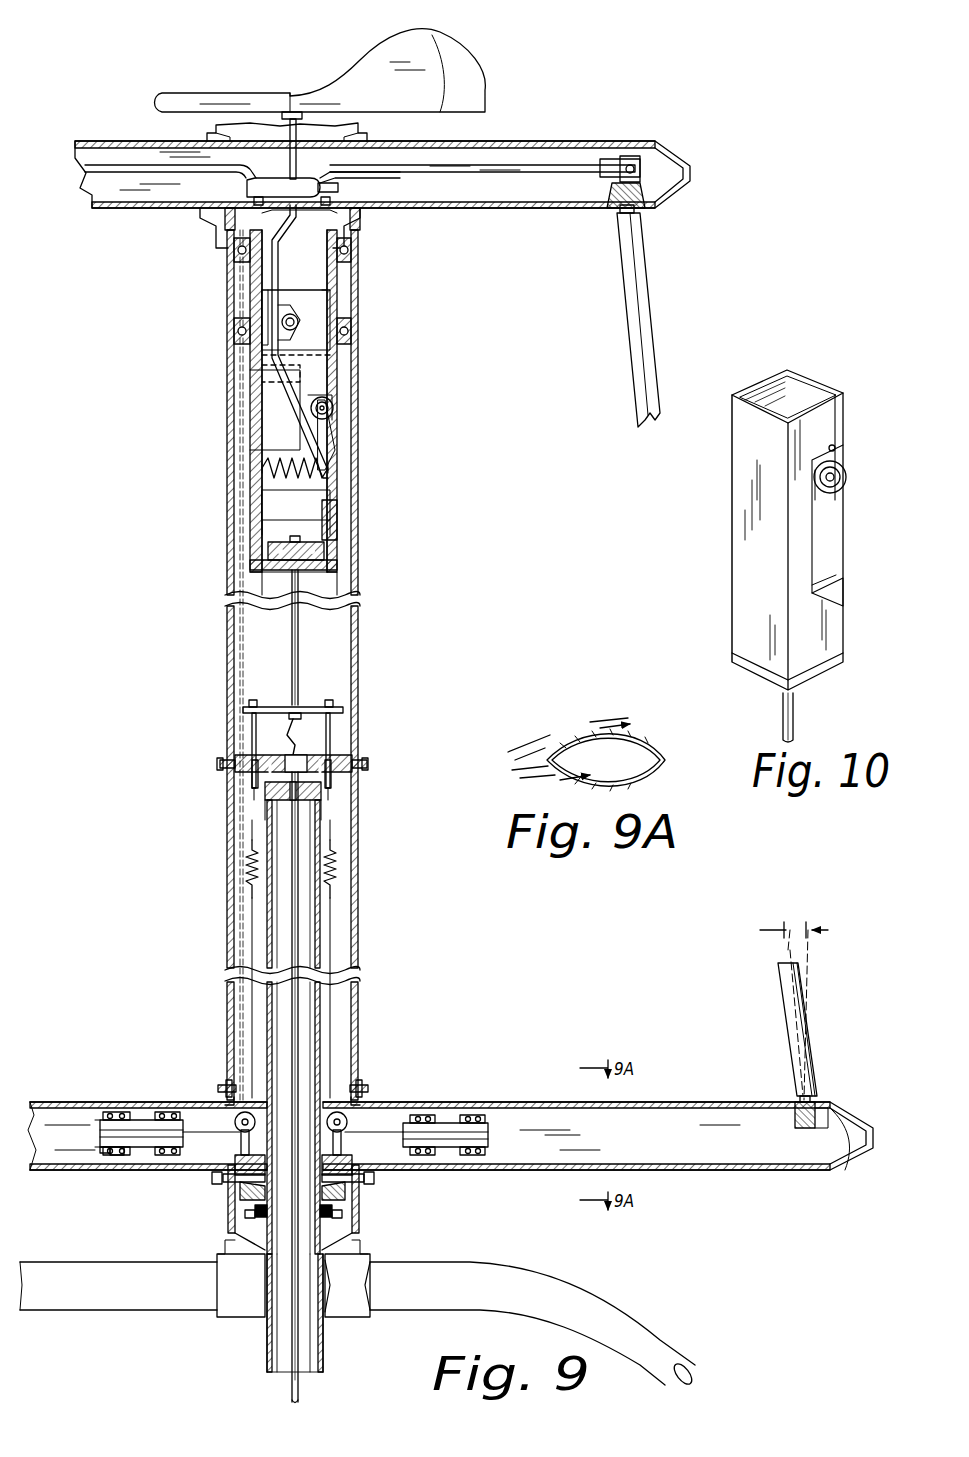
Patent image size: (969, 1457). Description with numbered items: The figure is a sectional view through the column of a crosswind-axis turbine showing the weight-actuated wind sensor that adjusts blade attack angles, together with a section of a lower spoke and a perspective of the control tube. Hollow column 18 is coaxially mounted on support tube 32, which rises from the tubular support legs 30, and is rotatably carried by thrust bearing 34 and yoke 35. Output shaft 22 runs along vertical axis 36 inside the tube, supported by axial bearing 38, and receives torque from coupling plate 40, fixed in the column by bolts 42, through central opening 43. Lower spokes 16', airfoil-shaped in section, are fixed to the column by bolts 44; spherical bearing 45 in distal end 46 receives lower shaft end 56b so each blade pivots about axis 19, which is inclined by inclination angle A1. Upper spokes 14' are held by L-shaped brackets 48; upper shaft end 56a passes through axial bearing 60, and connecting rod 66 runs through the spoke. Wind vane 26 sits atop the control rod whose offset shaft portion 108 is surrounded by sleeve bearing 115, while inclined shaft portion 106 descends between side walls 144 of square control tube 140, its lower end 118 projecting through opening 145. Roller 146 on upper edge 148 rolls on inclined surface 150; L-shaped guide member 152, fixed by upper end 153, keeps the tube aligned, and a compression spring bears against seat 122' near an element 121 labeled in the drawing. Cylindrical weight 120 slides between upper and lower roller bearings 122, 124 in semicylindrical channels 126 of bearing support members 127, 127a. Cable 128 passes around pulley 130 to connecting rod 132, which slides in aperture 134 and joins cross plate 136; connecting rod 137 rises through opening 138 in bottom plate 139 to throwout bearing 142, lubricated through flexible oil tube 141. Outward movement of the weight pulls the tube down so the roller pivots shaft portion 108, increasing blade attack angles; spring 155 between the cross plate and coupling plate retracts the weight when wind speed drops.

In FIG. 9, the upper spoke 14' is at (382, 153).
In FIG. 9, the lower spoke 16' is at (450, 1107).
In FIG. 9A, the lower spoke 16' is at (589, 738).
In FIG. 9, the column 18 is at (358, 641).
In FIG. 9, the vertical axis of blade 19 is at (642, 342).
In FIG. 9, the output shaft 22 is at (298, 1345).
In FIG. 9, the wind vane 26 is at (325, 62).
In FIG. 9, the tubular support leg 30 is at (470, 1272).
In FIG. 9, the support tube 32 is at (267, 1340).
In FIG. 9, the thrust bearing 34 is at (232, 1222).
In FIG. 9, the yoke 35 is at (230, 1175).
In FIG. 9, the vertical axis of column 36 is at (300, 1398).
In FIG. 9, the axial bearing 38 is at (315, 800).
In FIG. 9, the coupling plate 40 is at (318, 752).
In FIG. 9, the bolts 42 is at (228, 770).
In FIG. 9, the central opening 43 is at (285, 757).
In FIG. 9, the bolts 44 is at (222, 1085).
In FIG. 9, the spherical bearing 45 is at (828, 1102).
In FIG. 9, the distal end of spoke 46 is at (855, 1155).
In FIG. 9, the L-shaped bracket 48 is at (214, 216).
In FIG. 9, the upper shaft end 56a is at (645, 169).
In FIG. 9, the lower shaft end 56b is at (798, 1104).
In FIG. 9, the axial bearing 60 is at (612, 200).
In FIG. 9, the connecting rod 66 is at (480, 172).
In FIG. 9, the inclined shaft portion 106 is at (275, 432).
In FIG. 9, the offset shaft portion 108 is at (272, 280).
In FIG. 9, the sleeve bearing 115 is at (335, 282).
In FIG. 9, the lower end of shaft portion 118 is at (333, 468).
In FIG. 9, the cylindrical weight 120 is at (90, 1158).
In FIG. 9, the spring seat 121 is at (262, 517).
In FIG. 9, the upper roller bearing 122 is at (294, 1096).
In FIG. 9, the spring seat 122' is at (247, 507).
In FIG. 9, the lower roller bearing 124 is at (118, 1160).
In FIG. 9, the semicylindrical channel 126 is at (105, 1158).
In FIG. 9, the bearing support member 127 is at (100, 1113).
In FIG. 9, the bearing support member 127a is at (172, 1158).
In FIG. 9, the cable 128 is at (322, 1037).
In FIG. 9, the pulley 130 is at (365, 1100).
In FIG. 9, the connecting rod 132 is at (330, 718).
In FIG. 9, the aperture 134 is at (335, 775).
In FIG. 9, the cross plate 136 is at (275, 707).
In FIG. 9, the connecting rod 137 is at (298, 634).
In FIG. 10, the connecting rod 137 is at (793, 790).
In FIG. 9, the opening 138 is at (300, 568).
In FIG. 9, the bottom plate 139 is at (258, 580).
In FIG. 9, the control tube 140 is at (245, 487).
In FIG. 10, the control tube 140 is at (725, 552).
In FIG. 9, the flexible oil tube 141 is at (285, 738).
In FIG. 9, the throwout bearing 142 is at (330, 555).
In FIG. 9, the side wall 144 is at (250, 445).
In FIG. 10, the side wall 144 is at (752, 488).
In FIG. 9, the opening 145 is at (340, 500).
In FIG. 10, the opening 145 is at (850, 620).
In FIG. 9, the roller 146 is at (337, 395).
In FIG. 10, the roller 146 is at (832, 493).
In FIG. 10, the upper edge of opening 148 is at (840, 450).
In FIG. 9, the inclined surface 150 is at (262, 378).
In FIG. 9, the L-shaped guide member 152 is at (372, 304).
In FIG. 9, the upper end of guide member 153 is at (315, 325).
In FIG. 9, the spring 155 is at (250, 873).
In FIG. 9, the inclination angle A1 is at (812, 930).